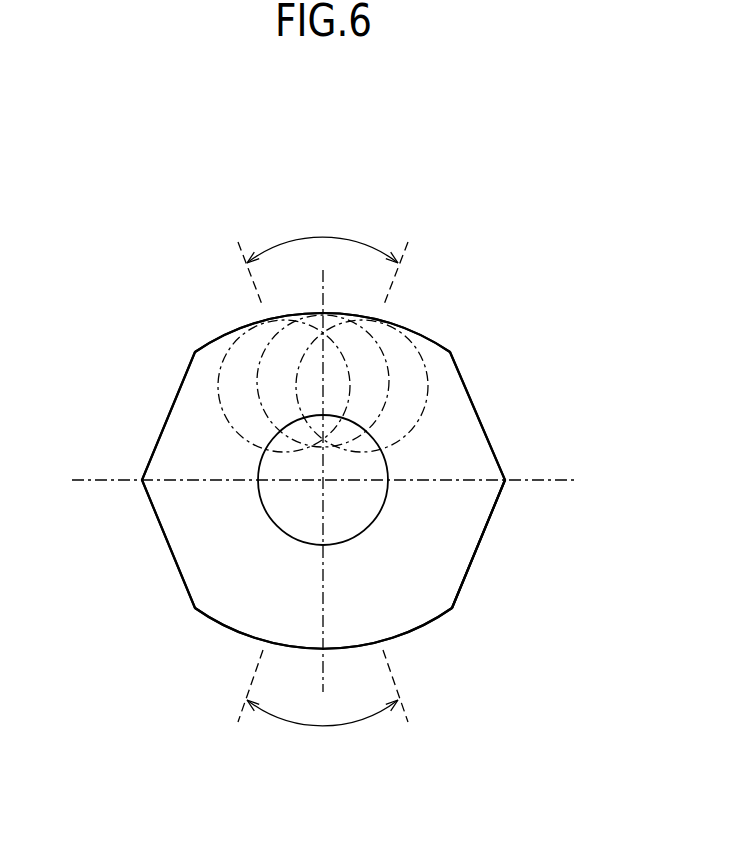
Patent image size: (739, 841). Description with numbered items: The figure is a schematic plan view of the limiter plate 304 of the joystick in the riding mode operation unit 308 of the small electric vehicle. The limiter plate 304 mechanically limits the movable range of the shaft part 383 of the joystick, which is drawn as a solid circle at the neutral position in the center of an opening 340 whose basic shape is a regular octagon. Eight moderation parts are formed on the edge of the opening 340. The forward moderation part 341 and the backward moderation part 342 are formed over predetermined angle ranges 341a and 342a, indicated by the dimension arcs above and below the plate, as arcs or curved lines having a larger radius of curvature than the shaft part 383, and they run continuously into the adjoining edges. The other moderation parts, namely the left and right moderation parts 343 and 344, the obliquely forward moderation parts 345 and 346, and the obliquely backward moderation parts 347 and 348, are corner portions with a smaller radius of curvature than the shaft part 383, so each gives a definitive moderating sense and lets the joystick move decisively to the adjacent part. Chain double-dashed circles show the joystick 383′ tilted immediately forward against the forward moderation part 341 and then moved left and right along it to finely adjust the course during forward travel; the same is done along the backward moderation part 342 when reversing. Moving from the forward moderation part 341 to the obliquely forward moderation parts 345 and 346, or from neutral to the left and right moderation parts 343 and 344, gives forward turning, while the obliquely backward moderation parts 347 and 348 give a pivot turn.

The riding mode operation unit 308 is at (518, 210).
The tube body 340 is at (453, 537).
The limiter plate 304 is at (468, 572).
The forward moderation part 341 is at (340, 314).
The predetermined angle range 341a is at (323, 237).
The backward moderation part 342 is at (325, 650).
The predetermined angle range 342a is at (317, 727).
The left moderation part 343 is at (142, 480).
The right moderation part 344 is at (505, 480).
The obliquely left forward moderation part 345 is at (195, 352).
The obliquely right forward moderation part 346 is at (450, 352).
The obliquely left backward moderation part 347 is at (195, 608).
The obliquely right backward moderation part 348 is at (452, 608).
The shaft part of the joystick 383 is at (390, 470).
The joystick tilted immediately forward 383′ is at (300, 320).